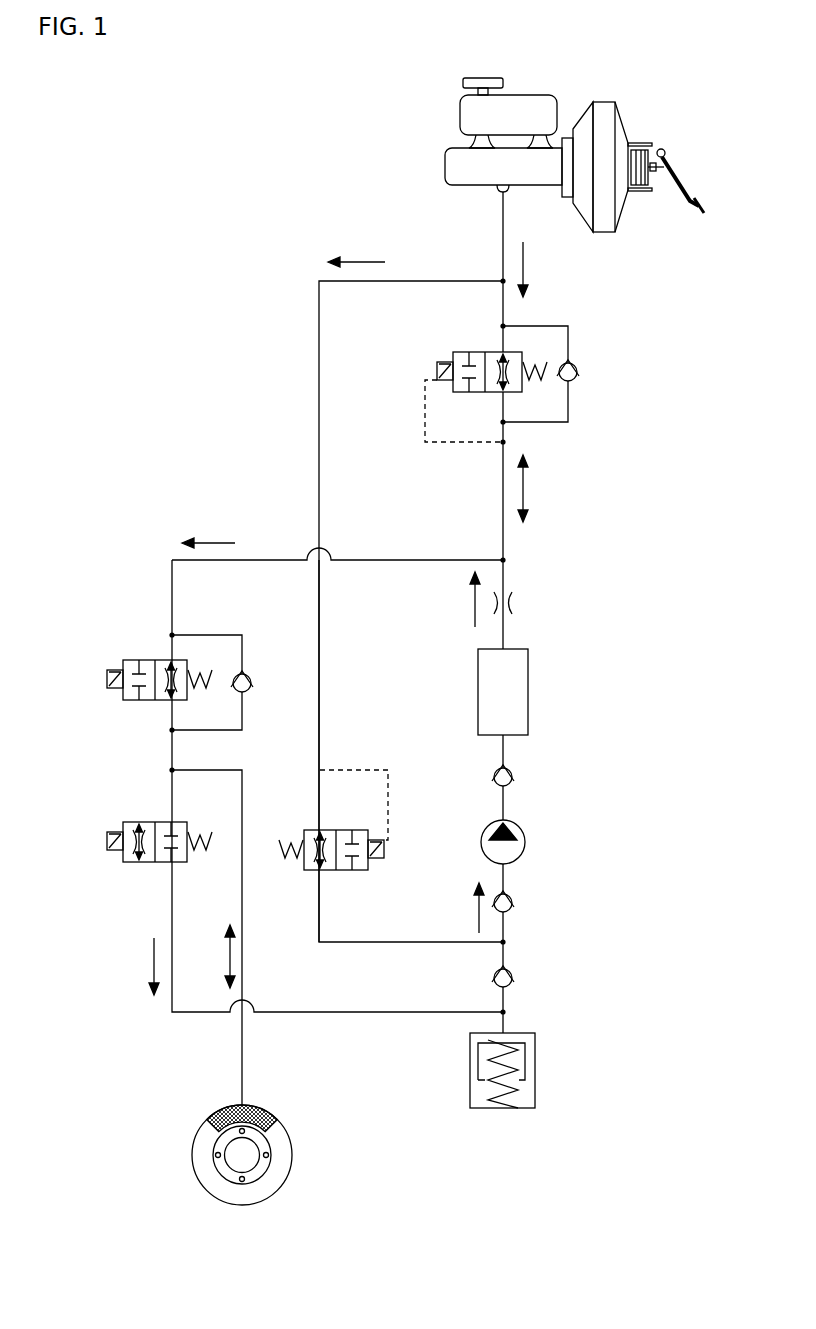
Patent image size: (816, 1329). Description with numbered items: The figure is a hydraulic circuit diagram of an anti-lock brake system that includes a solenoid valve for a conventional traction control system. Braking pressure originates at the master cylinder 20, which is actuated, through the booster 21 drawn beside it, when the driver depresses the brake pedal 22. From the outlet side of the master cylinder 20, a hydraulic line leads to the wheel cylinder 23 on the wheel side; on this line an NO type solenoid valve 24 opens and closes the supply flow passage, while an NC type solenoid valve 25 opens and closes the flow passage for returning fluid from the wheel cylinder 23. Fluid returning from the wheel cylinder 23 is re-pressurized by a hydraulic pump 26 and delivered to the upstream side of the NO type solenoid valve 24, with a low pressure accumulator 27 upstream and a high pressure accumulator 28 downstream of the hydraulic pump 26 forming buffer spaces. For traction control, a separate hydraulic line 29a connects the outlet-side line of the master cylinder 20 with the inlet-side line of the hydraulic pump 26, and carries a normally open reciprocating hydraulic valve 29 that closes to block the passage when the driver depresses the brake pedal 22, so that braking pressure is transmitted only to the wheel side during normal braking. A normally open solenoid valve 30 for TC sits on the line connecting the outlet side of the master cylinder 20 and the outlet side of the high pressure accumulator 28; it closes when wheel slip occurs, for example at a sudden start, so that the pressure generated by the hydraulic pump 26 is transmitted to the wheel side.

The master cylinder 20 is at (443, 163).
The brake booster 21 is at (620, 130).
The brake pedal 22 is at (683, 176).
The wheel cylinder 23 is at (278, 1116).
The NO type solenoid valve 24 is at (123, 690).
The NC type solenoid valve 25 is at (123, 853).
The hydraulic pump 26 is at (526, 840).
The low pressure accumulator 27 is at (535, 1069).
The high pressure accumulator 28 is at (528, 690).
The reciprocating hydraulic valve 29 is at (357, 870).
The hydraulic line 29a is at (322, 712).
The solenoid valve for TC 30 is at (453, 356).